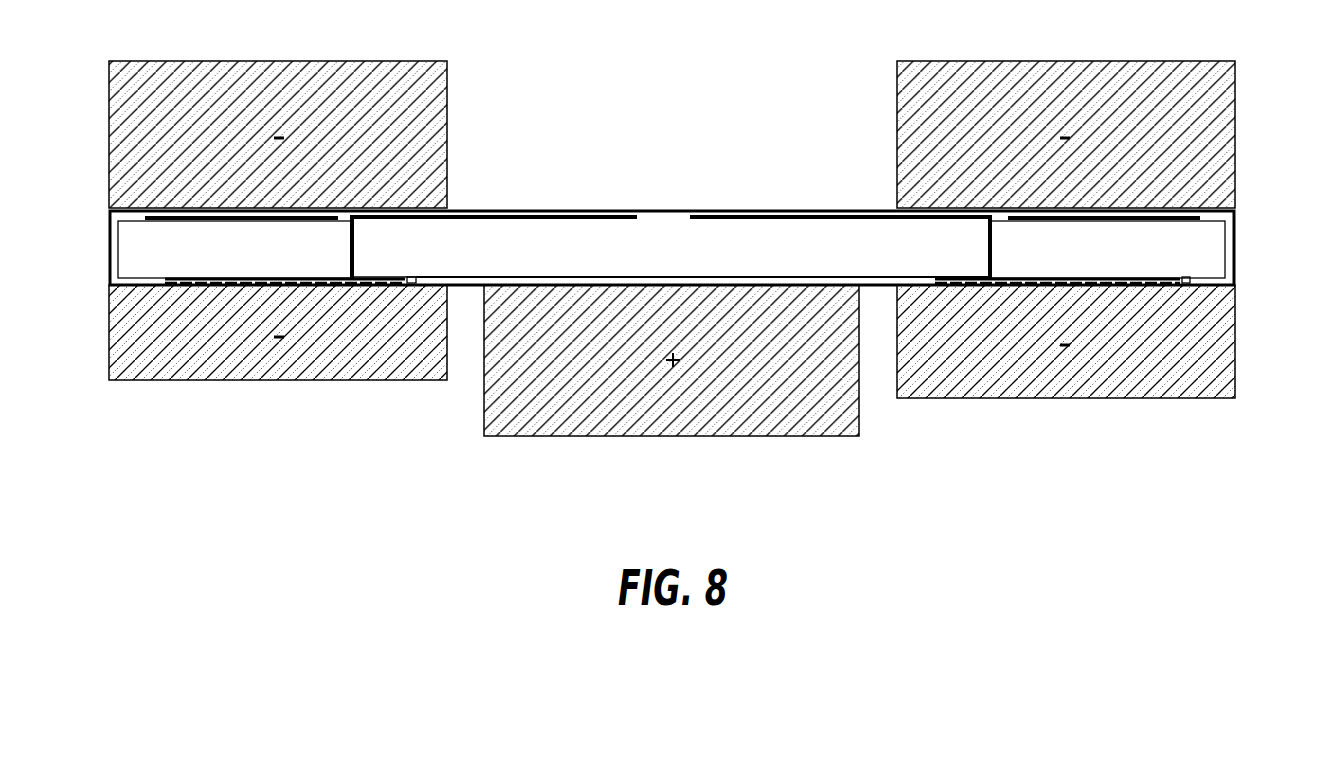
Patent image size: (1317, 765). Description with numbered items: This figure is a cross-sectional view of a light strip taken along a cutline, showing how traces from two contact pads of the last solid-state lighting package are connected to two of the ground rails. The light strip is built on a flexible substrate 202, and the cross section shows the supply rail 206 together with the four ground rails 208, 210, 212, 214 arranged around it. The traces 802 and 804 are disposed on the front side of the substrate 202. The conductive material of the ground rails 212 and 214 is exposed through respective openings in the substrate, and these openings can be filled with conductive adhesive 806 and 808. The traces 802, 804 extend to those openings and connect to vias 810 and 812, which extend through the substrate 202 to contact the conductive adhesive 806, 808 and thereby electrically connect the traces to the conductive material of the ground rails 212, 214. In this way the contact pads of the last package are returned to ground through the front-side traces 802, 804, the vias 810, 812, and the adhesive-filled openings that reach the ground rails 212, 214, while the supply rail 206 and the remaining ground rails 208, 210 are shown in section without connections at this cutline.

The flexible substrate 202 is at (1237, 253).
The supply rail 206 is at (656, 438).
The ground rail 208 is at (202, 60).
The ground rail 210 is at (1237, 129).
The ground rail 212 is at (1237, 356).
The ground rail 214 is at (221, 381).
The trace 802 is at (797, 215).
The trace 804 is at (511, 216).
The conductive adhesive 806 is at (1190, 281).
The conductive adhesive 808 is at (162, 254).
The via 810 is at (992, 247).
The via 812 is at (351, 242).